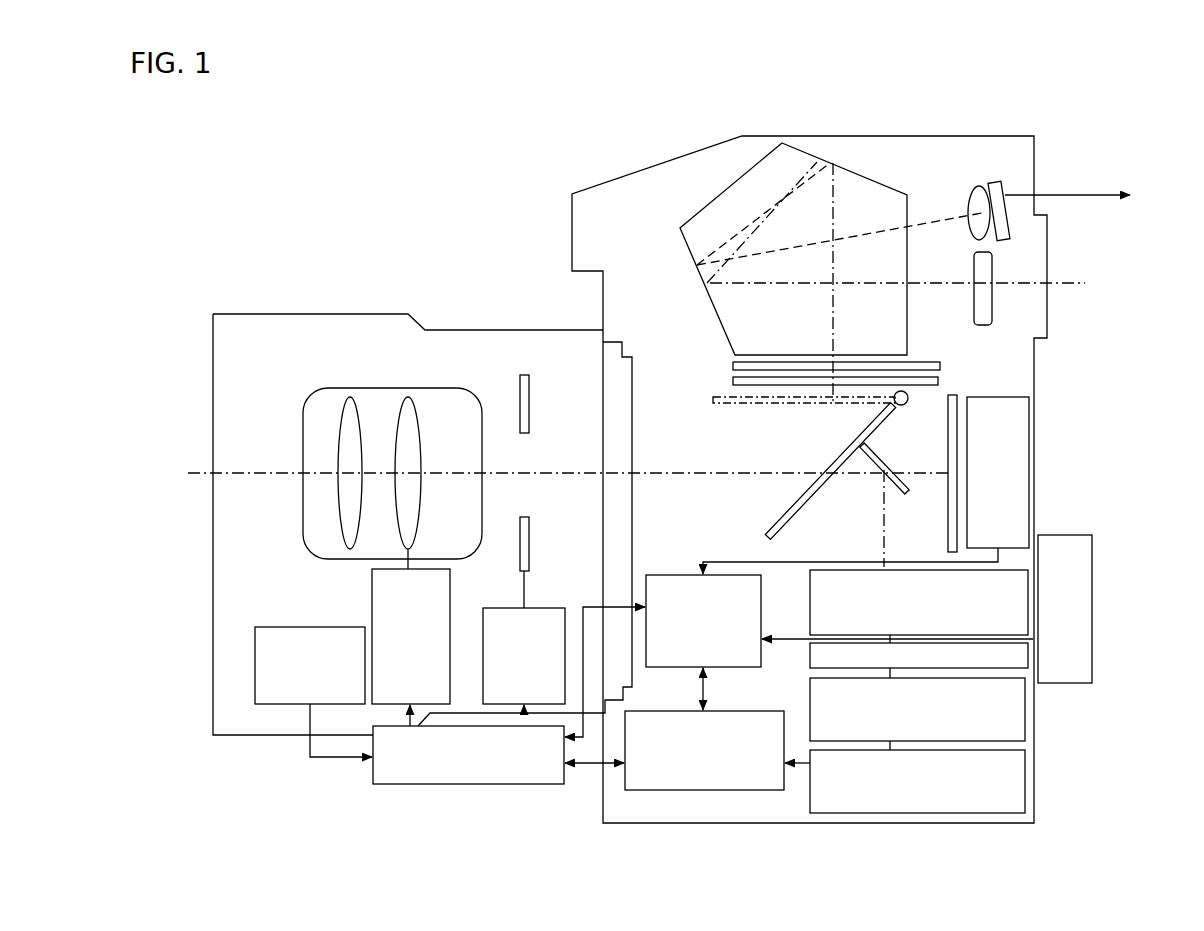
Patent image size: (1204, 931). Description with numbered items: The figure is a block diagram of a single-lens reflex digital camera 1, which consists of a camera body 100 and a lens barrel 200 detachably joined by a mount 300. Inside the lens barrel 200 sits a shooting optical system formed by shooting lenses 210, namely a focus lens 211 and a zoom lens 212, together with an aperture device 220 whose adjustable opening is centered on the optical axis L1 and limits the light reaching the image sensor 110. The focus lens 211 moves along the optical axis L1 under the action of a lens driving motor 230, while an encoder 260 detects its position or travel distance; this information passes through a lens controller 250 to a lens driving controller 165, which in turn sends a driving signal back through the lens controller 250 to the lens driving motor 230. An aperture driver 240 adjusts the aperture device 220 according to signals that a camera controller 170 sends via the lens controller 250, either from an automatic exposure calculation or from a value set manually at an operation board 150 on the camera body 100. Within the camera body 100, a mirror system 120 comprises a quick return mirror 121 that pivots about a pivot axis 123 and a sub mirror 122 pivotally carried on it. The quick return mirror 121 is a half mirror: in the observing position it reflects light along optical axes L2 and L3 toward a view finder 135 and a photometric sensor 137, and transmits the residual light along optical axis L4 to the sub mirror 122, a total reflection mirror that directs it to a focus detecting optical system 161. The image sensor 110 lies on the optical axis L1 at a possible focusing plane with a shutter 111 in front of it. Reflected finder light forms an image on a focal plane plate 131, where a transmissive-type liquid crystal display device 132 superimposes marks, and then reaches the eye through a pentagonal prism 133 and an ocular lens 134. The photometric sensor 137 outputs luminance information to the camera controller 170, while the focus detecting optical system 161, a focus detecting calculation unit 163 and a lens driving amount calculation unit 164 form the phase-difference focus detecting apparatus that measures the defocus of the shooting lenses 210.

The single-lens reflex digital camera 1 is at (1022, 106).
The camera body 100 is at (698, 146).
The image sensor 110 is at (1032, 472).
The shutter 111 is at (953, 423).
The mirror system 120 is at (745, 410).
The quick return mirror 121 is at (815, 482).
The sub mirror 122 is at (885, 470).
The pivot axis 123 is at (906, 405).
The focal plane plate 131 is at (940, 382).
The transmissive-type liquid crystal display device 132 is at (943, 362).
The pentagonal prism 133 is at (702, 226).
The ocular lens 134 is at (992, 285).
The view finder 135 is at (1047, 232).
The photometric sensor 137 is at (994, 182).
The operation board 150 is at (1065, 535).
The focus detecting optical system 161 is at (919, 602).
The focus detecting calculation unit 163 is at (917, 709).
The lens driving amount calculation unit 164 is at (917, 781).
The lens driving controller 165 is at (704, 750).
The camera controller 170 is at (925, 426).
The lens barrel 200 is at (270, 313).
The shooting lenses 210 is at (347, 282).
The focus lens 211 is at (408, 397).
The zoom lens 212 is at (350, 397).
The aperture device 220 is at (524, 375).
The lens driving motor 230 is at (411, 626).
The aperture driver 240 is at (524, 637).
The lens controller 250 is at (468, 755).
The encoder 260 is at (310, 665).
The mount 300 is at (613, 400).
The optical axis L1 is at (203, 472).
The optical axis L2 is at (1083, 282).
The optical axis L3 is at (942, 214).
The optical axis L4 is at (885, 535).